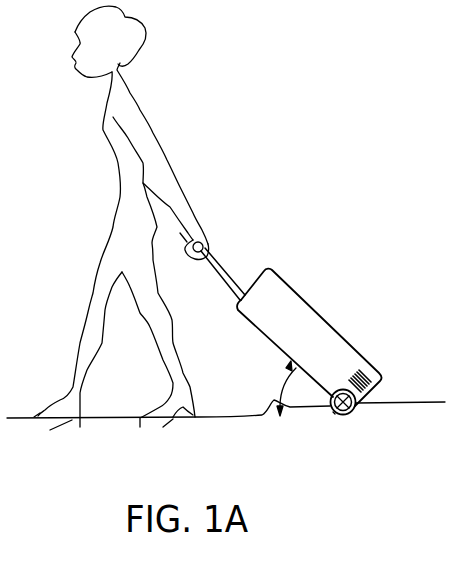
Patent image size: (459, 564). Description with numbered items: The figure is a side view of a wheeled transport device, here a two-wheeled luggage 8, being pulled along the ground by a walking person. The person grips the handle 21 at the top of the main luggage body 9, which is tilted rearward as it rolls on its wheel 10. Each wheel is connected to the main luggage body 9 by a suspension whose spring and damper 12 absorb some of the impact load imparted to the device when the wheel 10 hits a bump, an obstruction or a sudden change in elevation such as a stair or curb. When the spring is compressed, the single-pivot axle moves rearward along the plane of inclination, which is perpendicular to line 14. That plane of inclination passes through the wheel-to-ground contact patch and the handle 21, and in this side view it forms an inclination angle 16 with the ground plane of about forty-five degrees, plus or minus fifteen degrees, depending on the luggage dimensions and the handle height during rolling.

The two-wheeled luggage 8 is at (296, 363).
The main luggage body 9 is at (345, 346).
The wheel 10 is at (344, 414).
The spring and damper 12 is at (378, 381).
The line 14 is at (333, 418).
The inclination angle 16 is at (280, 390).
The handle 21 is at (206, 252).